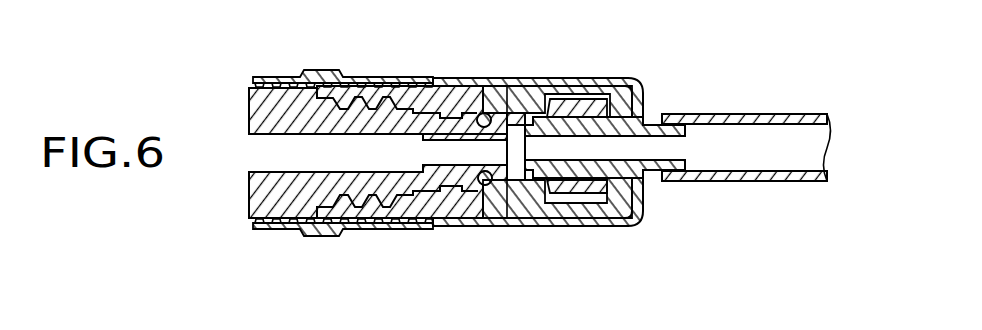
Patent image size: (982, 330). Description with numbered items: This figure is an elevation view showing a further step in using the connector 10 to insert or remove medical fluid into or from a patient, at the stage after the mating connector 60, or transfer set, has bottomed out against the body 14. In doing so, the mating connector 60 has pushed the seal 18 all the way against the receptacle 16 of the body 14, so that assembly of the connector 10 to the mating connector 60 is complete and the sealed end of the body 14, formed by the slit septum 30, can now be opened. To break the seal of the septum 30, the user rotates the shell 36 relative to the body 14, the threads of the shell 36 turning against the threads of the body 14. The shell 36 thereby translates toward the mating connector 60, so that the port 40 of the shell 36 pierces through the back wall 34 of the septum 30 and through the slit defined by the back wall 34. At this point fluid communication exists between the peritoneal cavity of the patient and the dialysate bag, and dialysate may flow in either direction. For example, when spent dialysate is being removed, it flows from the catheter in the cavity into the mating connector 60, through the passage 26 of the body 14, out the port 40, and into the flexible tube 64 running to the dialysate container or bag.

The connector 10 is at (580, 235).
The body 14 is at (423, 98).
The receptacle 16 is at (480, 188).
The seal 18 is at (483, 113).
The passage 26 is at (453, 153).
The slit septum 30 is at (580, 113).
The back wall 34 is at (527, 118).
The shell 36 is at (325, 237).
The port 40 is at (648, 122).
The mating connector 60 is at (249, 110).
The flexible tube 64 is at (768, 113).